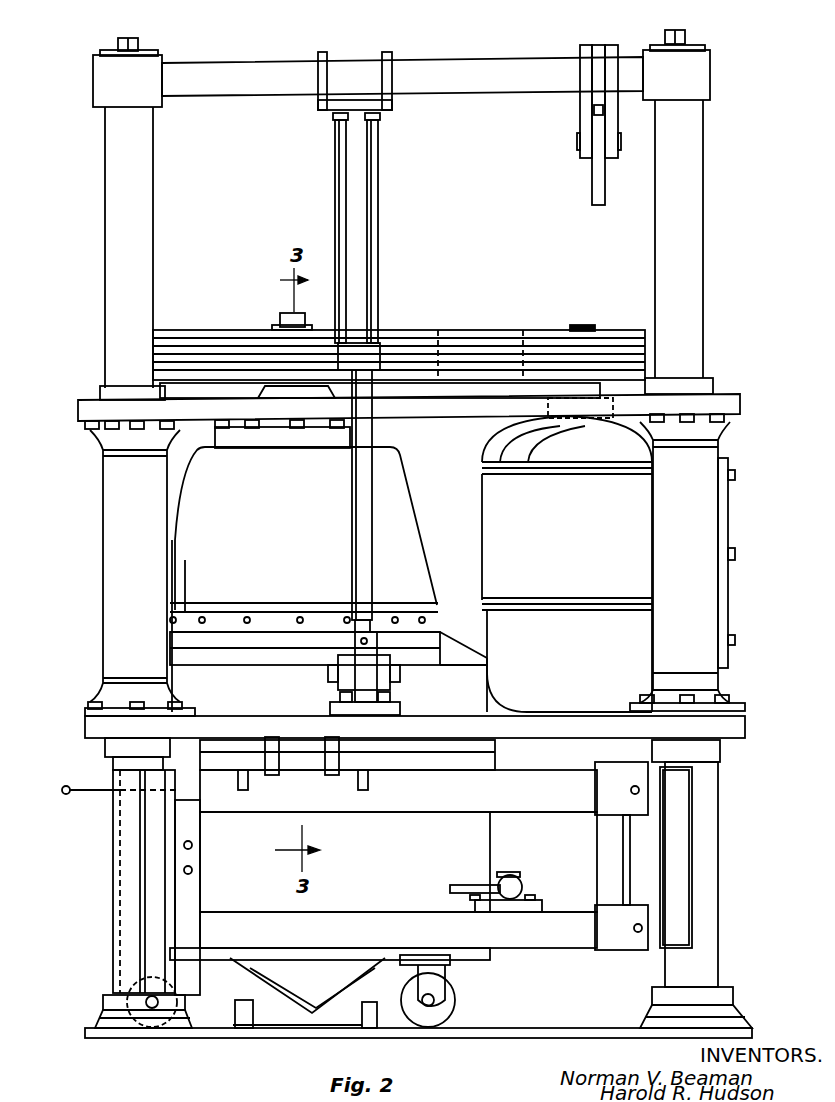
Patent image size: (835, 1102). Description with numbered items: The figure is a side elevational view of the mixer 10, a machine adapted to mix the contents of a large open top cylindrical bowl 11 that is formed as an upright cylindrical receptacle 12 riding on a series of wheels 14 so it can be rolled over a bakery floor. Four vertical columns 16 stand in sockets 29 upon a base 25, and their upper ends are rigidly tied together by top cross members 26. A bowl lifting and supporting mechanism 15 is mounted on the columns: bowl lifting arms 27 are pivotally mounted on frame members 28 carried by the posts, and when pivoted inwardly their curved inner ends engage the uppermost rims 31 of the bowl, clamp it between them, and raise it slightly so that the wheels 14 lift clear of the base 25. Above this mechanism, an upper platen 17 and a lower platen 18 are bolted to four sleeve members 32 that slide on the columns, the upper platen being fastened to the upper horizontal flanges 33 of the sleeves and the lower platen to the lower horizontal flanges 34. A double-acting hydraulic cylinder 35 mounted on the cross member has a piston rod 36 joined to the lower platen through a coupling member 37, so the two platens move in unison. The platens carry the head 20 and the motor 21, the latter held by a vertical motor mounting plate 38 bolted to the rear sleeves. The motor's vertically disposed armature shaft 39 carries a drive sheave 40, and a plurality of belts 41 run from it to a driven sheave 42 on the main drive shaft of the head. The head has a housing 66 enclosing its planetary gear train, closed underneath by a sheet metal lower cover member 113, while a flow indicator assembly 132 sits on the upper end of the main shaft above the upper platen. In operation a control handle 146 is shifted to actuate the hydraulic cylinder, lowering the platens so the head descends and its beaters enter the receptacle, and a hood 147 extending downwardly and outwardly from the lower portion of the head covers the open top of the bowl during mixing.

The mixer 10 is at (116, 490).
The bowl 11 is at (500, 849).
The cylindrical receptacle 12 is at (386, 882).
The wheels 14 is at (445, 1005).
The bowl lifting and supporting mechanism 15 is at (368, 512).
The vertical columns 16 is at (113, 245).
The upper platen 17 is at (407, 379).
The lower platen 18 is at (563, 718).
The head 20 is at (210, 502).
The motor 21 is at (567, 555).
The base 25 is at (212, 1040).
The top cross members 26 is at (475, 68).
The bowl lifting arm 27 is at (297, 755).
The frame members 28 is at (350, 760).
The sockets 29 is at (100, 1003).
The uppermost rims 31 is at (455, 740).
The sleeve members 32 is at (123, 580).
The upper horizontal flanges 33 is at (82, 428).
The lower horizontal flanges 34 is at (95, 714).
The double-acting hydraulic cylinder 35 is at (362, 222).
The piston rod 36 is at (362, 537).
The coupling member 37 is at (380, 680).
The vertical motor mounting plate 38 is at (735, 520).
The armature shaft 39 is at (585, 327).
The drive sheave 40 is at (543, 330).
The belts 41 is at (470, 345).
The driven sheave 42 is at (197, 333).
The housing 66 is at (405, 563).
The lower cover member 113 is at (268, 628).
The flow indicator assembly 132 is at (283, 315).
The control handle 146 is at (85, 797).
The hood 147 is at (463, 683).